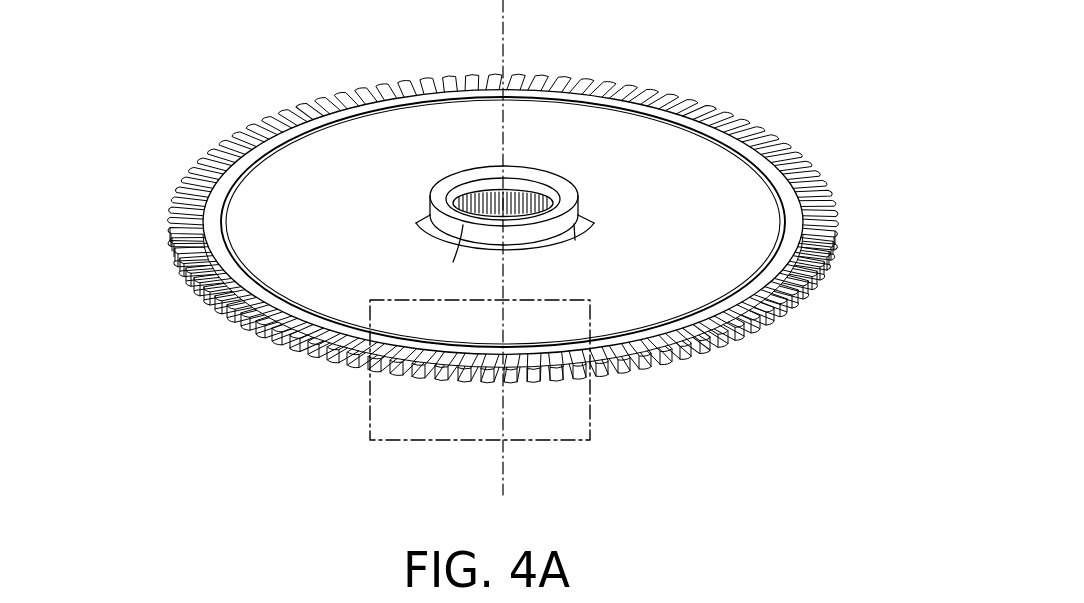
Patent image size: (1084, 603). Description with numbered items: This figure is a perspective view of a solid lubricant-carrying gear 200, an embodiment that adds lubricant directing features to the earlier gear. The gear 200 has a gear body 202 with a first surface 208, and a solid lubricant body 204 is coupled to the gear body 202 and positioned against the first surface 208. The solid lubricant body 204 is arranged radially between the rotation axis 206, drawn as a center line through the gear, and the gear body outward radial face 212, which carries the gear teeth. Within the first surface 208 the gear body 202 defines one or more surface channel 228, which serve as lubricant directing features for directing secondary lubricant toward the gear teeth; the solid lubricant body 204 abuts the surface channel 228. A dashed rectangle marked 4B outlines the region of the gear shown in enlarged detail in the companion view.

The solid lubricant-carrying gear 200 is at (496, 270).
The gear body 202 is at (700, 275).
The solid lubricant body 204 is at (793, 237).
The rotation axis 206 is at (503, 38).
The first surface 208 is at (304, 252).
The gear body outward radial face 212 is at (235, 328).
The surface channel 228 is at (647, 348).
The detail view 4B region 4B is at (590, 432).